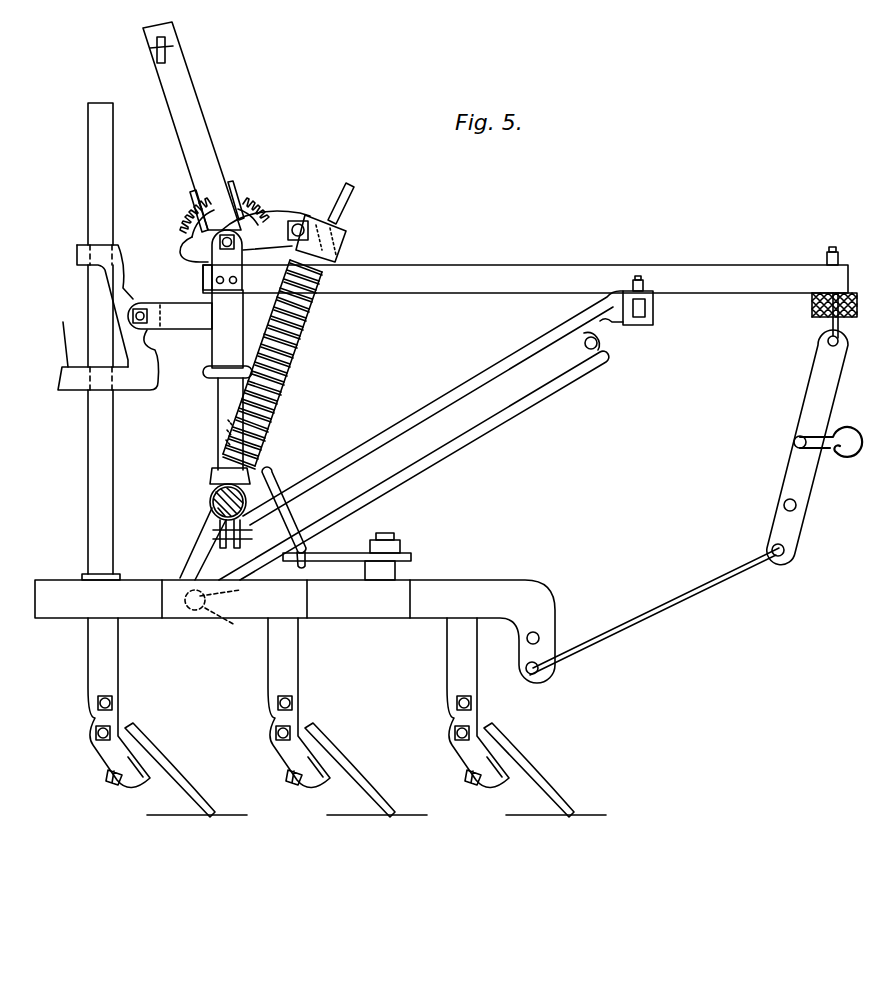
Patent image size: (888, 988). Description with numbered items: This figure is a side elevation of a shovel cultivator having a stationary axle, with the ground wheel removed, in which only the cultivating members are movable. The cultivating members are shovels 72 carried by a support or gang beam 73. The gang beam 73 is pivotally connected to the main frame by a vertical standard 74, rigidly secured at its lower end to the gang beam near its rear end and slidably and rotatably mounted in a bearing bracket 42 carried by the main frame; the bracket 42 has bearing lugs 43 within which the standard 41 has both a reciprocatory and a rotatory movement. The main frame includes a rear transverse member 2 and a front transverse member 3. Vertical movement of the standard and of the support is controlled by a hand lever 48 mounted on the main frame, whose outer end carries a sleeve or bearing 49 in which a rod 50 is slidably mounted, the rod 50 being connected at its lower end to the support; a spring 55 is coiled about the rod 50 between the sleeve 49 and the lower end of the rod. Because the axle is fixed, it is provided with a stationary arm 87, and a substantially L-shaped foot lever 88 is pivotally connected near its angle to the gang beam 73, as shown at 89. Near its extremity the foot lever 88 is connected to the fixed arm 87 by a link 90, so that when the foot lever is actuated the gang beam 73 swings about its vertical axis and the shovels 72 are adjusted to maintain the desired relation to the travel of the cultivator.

The rear transverse member 2 is at (222, 338).
The front transverse member 3 is at (655, 308).
The vertical standard 41 is at (115, 485).
The bracket 42 is at (132, 298).
The bearing lugs 43 is at (87, 264).
The hand lever 48 is at (203, 133).
The sleeve or bearing 49 is at (342, 238).
The rod 50 is at (350, 186).
The spring 55 is at (288, 358).
The shovels 72 is at (188, 765).
The gang beam 73 is at (368, 605).
The vertical standard 74 is at (88, 578).
The stationary arm 87 is at (249, 480).
The foot lever 88 is at (335, 553).
The pivotal connection 89 is at (396, 572).
The link 90 is at (283, 515).